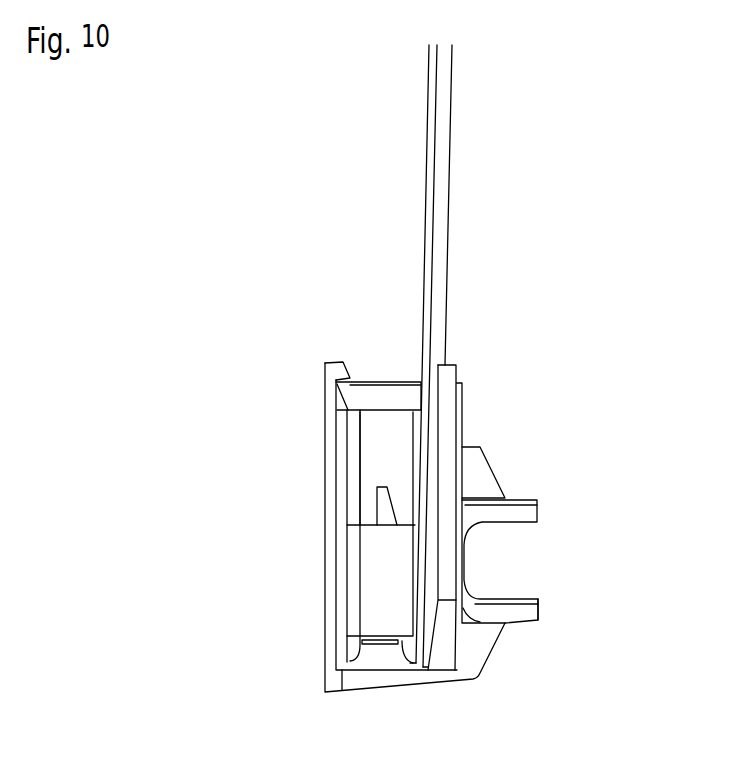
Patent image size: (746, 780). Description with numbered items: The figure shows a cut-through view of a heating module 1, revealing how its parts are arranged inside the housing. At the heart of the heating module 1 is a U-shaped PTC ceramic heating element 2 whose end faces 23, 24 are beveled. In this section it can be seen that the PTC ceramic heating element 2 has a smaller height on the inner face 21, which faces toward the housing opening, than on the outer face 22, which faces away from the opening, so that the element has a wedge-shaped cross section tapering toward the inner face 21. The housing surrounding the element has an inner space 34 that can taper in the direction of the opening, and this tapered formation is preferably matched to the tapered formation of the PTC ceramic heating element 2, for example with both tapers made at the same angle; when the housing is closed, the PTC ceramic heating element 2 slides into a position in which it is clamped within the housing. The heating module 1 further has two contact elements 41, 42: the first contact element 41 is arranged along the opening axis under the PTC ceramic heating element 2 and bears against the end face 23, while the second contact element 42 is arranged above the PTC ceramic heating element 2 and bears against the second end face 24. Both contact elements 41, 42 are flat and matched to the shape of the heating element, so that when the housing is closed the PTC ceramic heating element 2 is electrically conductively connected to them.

The heating module 1 is at (200, 309).
The PTC ceramic heating element 2 is at (376, 559).
The inner face 21 is at (388, 636).
The outer face 22 is at (403, 527).
The end face 23 is at (415, 582).
The end face 24 is at (350, 611).
The inner space 34 is at (400, 450).
The first contact element 41 is at (430, 356).
The second contact element 42 is at (348, 496).